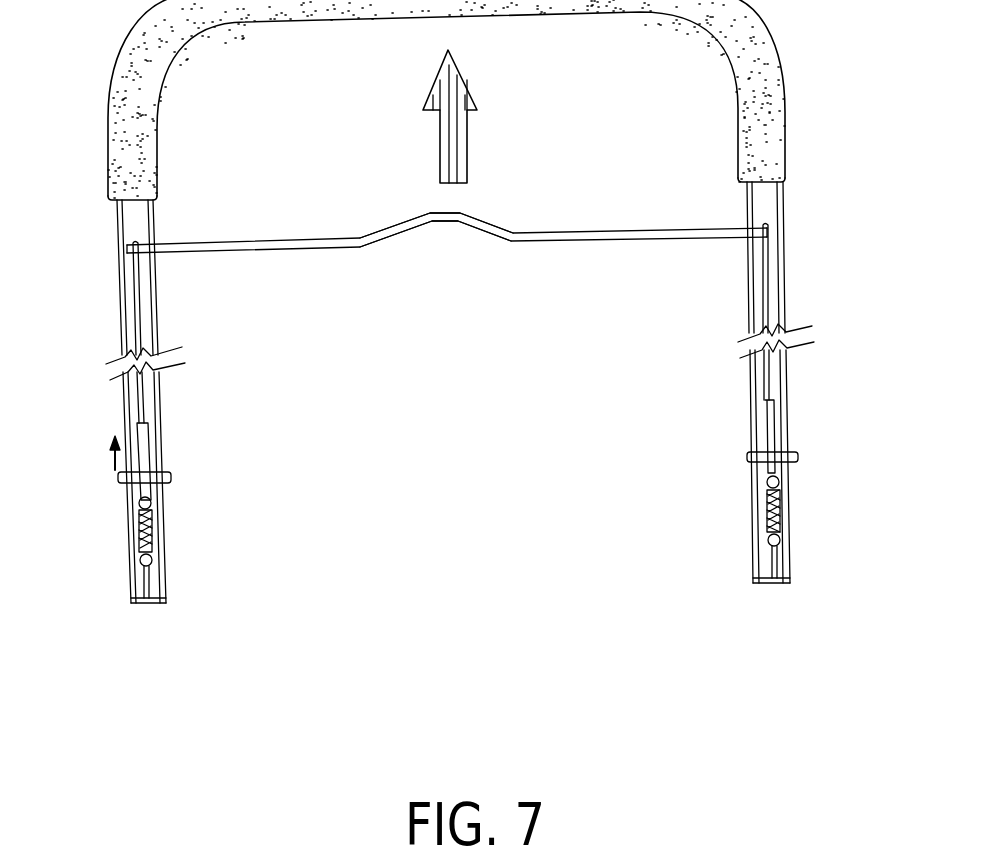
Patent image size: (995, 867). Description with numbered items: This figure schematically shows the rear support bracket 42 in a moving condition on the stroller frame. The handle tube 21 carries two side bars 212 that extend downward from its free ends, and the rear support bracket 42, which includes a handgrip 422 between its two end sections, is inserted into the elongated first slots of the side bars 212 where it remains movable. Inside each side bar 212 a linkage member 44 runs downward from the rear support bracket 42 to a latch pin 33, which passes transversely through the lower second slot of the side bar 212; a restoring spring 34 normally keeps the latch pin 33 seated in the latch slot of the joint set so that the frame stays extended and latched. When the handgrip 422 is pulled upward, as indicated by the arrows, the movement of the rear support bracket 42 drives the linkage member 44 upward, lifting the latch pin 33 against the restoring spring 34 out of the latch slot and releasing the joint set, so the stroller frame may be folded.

The handle tube 21 is at (817, 283).
The side bar 212 is at (120, 292).
The rear support bracket 42 is at (570, 268).
The handgrip 422 is at (470, 218).
The linkage member 44 is at (142, 330).
The latch pin 33 is at (169, 473).
The restoring spring 34 is at (153, 550).